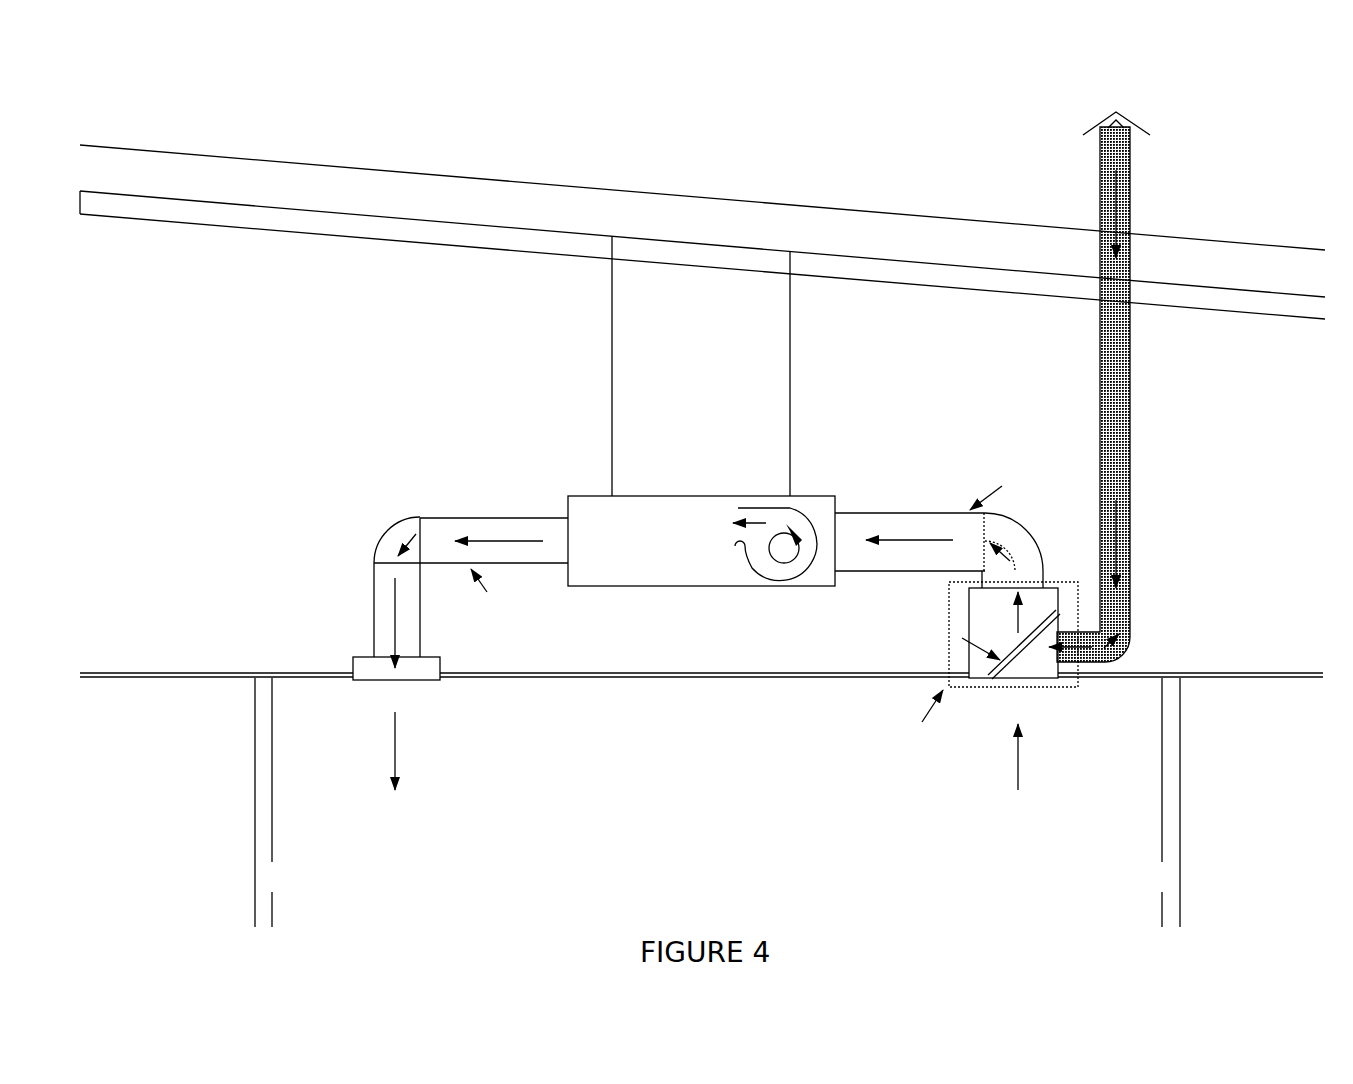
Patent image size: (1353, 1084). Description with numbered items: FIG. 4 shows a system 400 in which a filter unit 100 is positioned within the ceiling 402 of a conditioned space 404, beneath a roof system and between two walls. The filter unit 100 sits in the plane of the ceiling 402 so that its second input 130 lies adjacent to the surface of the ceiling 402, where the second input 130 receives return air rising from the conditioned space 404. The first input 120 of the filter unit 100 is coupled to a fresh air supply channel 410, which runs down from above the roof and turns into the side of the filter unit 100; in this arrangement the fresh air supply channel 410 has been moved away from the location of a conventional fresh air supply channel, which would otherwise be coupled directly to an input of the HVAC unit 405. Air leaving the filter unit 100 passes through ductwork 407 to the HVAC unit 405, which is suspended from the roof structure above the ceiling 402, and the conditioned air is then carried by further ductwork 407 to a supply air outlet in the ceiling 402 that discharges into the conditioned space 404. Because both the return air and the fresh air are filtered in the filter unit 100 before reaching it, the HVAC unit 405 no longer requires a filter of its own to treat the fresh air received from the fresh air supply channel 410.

The system 400 is at (228, 100).
The ceiling 402 is at (305, 680).
The conditioned space 404 is at (717, 792).
The HVAC unit 405 is at (632, 527).
The ductwork system 407 is at (838, 507).
The fresh air supply channel 410 is at (1112, 248).
The filter unit 100 is at (1043, 663).
The first input 120 is at (1057, 633).
The second input 130 is at (1000, 684).